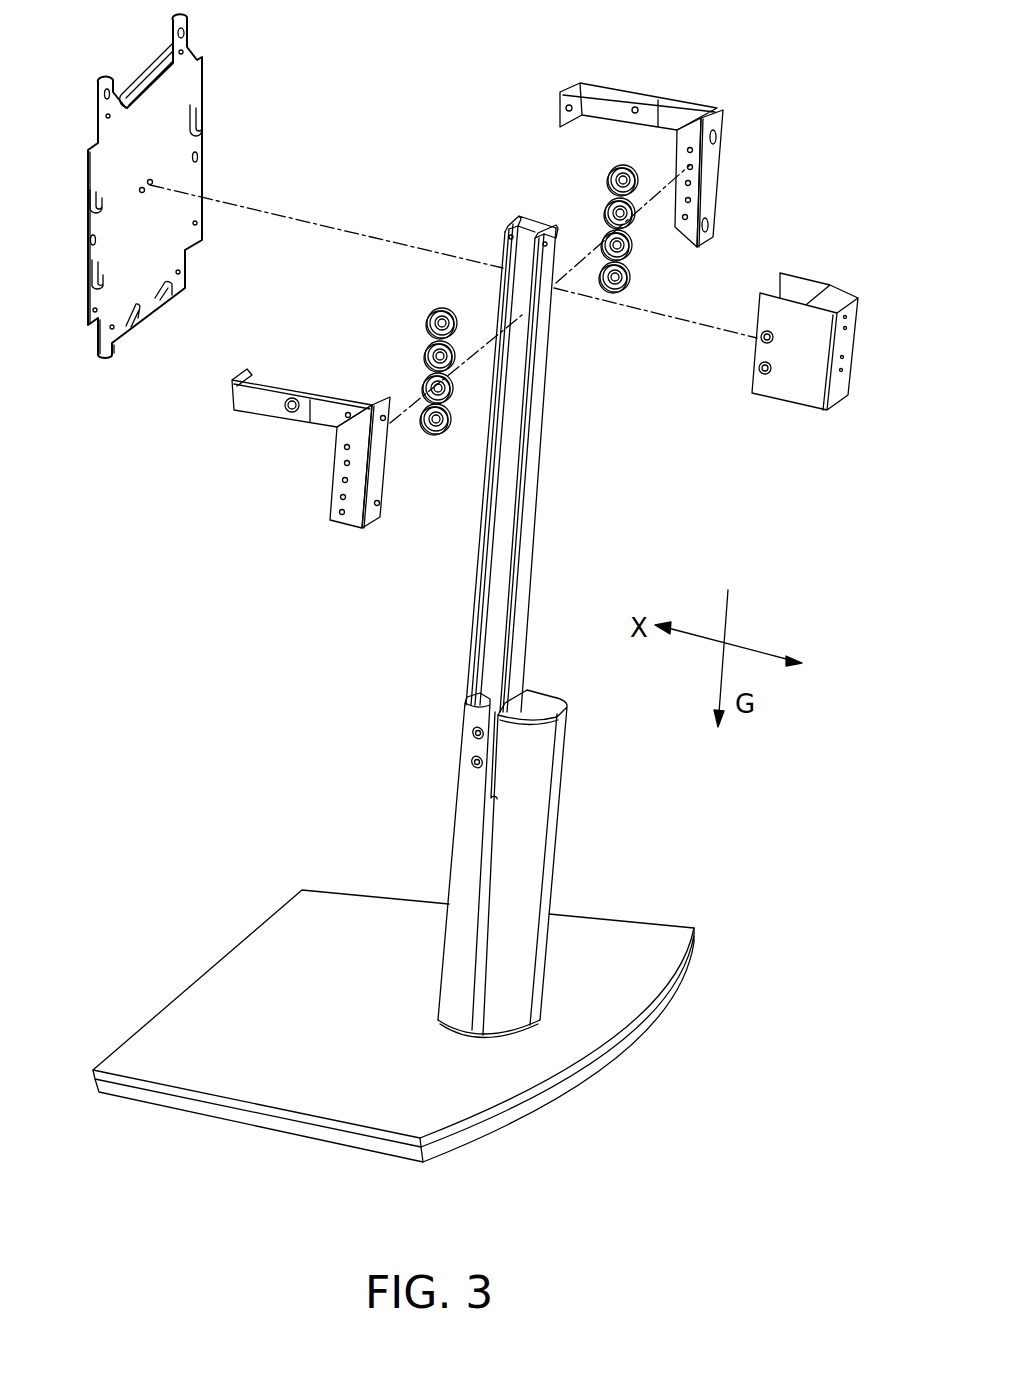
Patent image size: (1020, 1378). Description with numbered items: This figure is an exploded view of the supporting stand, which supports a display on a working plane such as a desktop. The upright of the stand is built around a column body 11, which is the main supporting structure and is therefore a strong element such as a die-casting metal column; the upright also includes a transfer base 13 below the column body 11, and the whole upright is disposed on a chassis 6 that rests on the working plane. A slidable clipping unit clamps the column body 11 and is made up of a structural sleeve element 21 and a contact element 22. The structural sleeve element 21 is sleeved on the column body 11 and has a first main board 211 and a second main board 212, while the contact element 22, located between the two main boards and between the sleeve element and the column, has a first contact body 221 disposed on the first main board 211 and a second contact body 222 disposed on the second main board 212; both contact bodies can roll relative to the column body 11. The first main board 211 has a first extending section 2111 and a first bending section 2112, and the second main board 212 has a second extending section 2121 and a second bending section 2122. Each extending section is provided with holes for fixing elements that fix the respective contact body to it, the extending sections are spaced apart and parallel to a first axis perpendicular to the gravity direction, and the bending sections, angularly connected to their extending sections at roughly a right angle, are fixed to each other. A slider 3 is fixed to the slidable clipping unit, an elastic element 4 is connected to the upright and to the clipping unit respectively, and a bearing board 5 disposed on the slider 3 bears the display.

The slider 3 is at (610, 95).
The elastic element 4 is at (795, 387).
The bearing board 5 is at (86, 230).
The chassis 6 is at (634, 916).
The column body 11 is at (530, 485).
The transfer base 13 is at (540, 785).
The structural sleeve element 21 is at (564, 337).
The contact element 22 is at (525, 269).
The first main board 211 is at (374, 526).
The second main board 212 is at (786, 160).
The first contact body 221 is at (445, 292).
The second contact body 222 is at (600, 185).
The first extending section 2111 is at (347, 531).
The first bending section 2112 is at (402, 496).
The second extending section 2121 is at (712, 108).
The second bending section 2122 is at (724, 137).